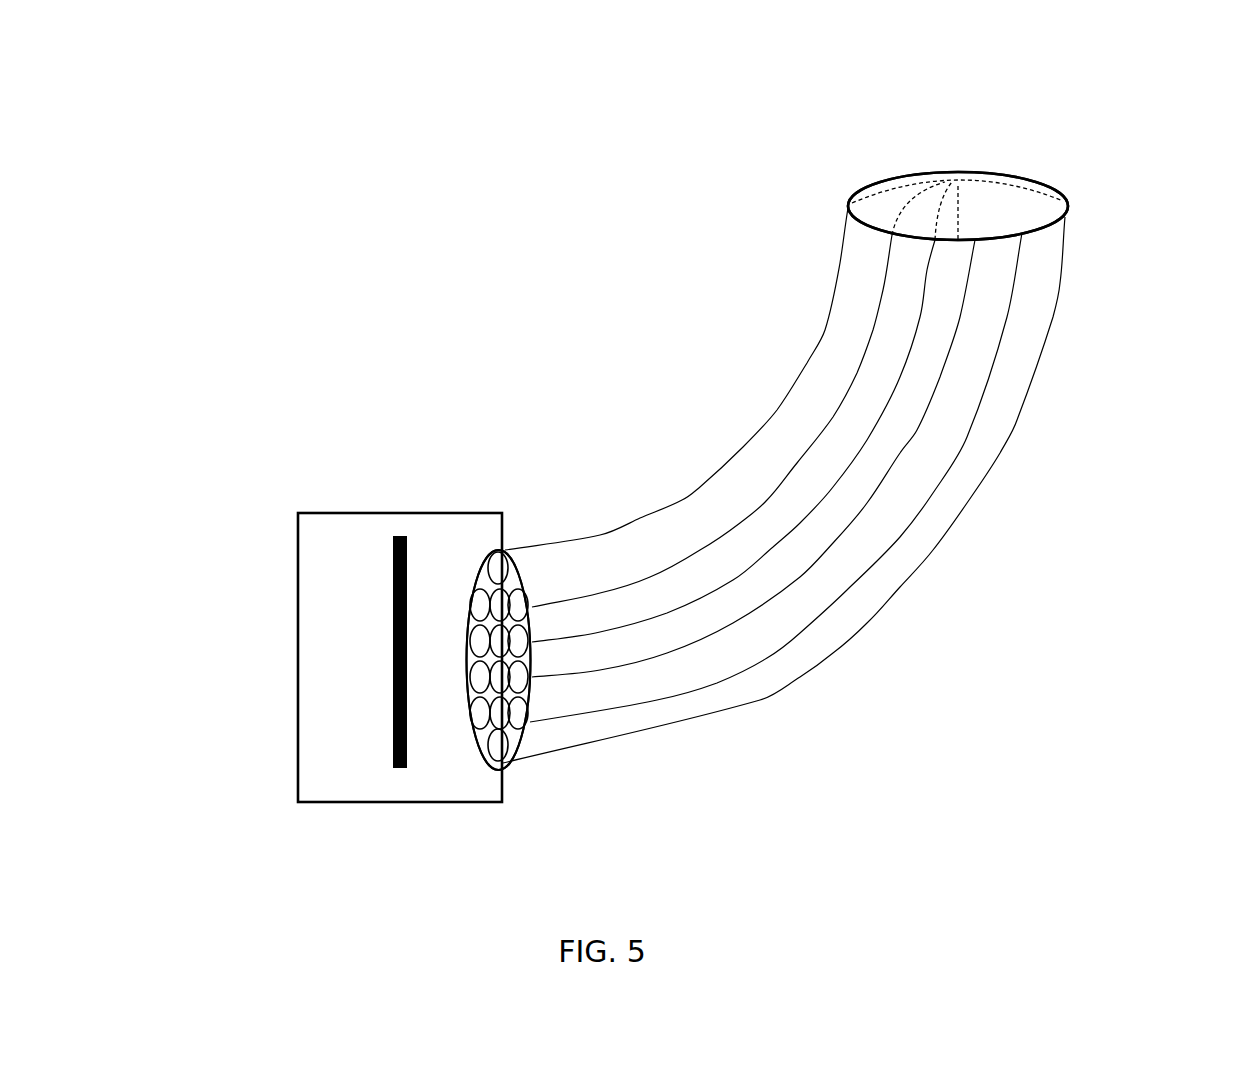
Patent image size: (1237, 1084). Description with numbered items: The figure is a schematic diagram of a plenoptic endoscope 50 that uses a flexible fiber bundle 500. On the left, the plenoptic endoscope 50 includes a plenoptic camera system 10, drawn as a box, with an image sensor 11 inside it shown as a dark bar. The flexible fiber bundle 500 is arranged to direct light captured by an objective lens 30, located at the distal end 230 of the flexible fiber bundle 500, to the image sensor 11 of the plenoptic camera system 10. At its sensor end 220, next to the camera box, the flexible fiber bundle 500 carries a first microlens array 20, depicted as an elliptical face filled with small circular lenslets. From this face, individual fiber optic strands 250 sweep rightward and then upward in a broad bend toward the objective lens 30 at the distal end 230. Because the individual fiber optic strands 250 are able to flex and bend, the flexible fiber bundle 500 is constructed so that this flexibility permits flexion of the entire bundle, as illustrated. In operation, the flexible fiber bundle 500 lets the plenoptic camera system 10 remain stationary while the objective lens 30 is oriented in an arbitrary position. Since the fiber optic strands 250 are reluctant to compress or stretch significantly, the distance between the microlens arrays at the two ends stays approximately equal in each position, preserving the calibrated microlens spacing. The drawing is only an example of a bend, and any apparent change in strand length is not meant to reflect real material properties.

The plenoptic endoscope 50 is at (396, 192).
The plenoptic camera system 10 is at (356, 488).
The image sensor 11 is at (390, 748).
The first microlens array 20 is at (511, 553).
The sensor end 220 is at (528, 800).
The flexible fiber bundle 500 is at (694, 440).
The fiber optic strands 250 is at (813, 625).
The objective lens 30 is at (1012, 203).
The distal end 230 is at (1104, 231).